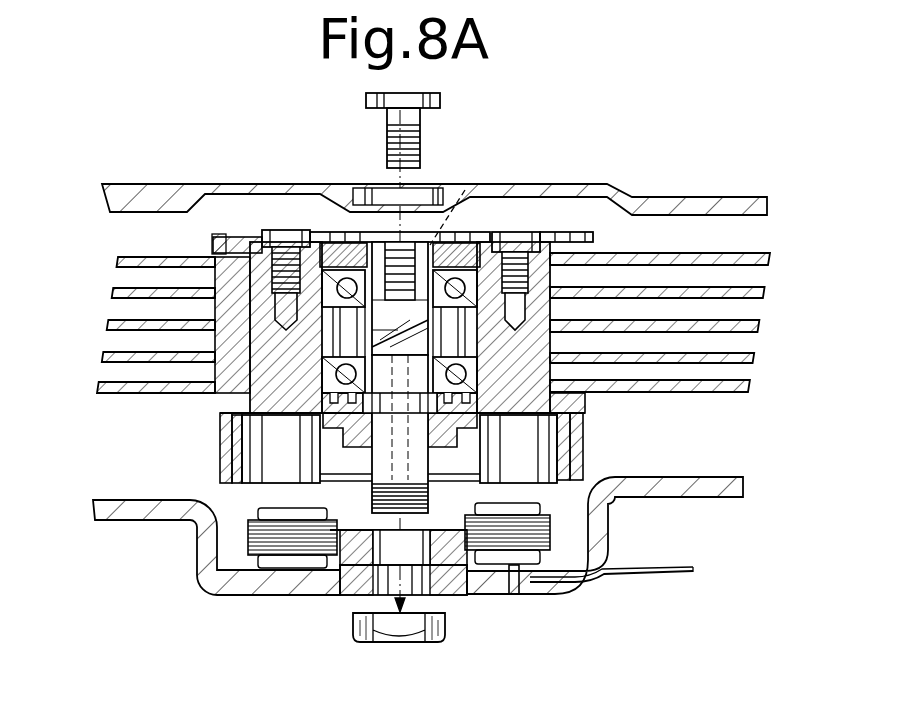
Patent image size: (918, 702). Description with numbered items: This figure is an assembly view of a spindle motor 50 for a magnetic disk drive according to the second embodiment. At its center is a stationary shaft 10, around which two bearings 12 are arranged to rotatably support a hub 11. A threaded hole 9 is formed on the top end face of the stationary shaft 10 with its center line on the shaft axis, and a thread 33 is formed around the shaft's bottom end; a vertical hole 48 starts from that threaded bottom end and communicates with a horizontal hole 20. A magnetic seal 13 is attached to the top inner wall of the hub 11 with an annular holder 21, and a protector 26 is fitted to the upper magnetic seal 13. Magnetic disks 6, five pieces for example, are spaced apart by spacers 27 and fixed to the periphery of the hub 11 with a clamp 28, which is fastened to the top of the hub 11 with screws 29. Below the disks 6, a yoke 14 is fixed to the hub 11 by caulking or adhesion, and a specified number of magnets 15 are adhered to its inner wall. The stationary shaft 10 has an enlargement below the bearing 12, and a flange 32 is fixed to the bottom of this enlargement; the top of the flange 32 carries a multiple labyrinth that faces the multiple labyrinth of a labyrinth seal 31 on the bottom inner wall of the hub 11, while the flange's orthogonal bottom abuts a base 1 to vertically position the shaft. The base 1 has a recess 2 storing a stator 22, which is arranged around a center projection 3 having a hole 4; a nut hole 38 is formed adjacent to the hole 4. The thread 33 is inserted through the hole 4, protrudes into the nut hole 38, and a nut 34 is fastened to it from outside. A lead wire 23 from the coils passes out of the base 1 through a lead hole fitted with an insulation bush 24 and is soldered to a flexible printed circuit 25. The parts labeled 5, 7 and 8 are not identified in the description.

The spindle motor 50 is at (97, 205).
The mounting plate 5 is at (678, 205).
The fixing screw 8 is at (440, 100).
The shaft pin 7 is at (412, 248).
The clamp 28 is at (215, 237).
The screws 29 is at (290, 230).
The annular holder 21 is at (330, 238).
The protector 26 is at (345, 262).
The magnetic seal 13 is at (452, 280).
The threaded hole 9 is at (428, 290).
The horizontal hole 20 is at (465, 190).
The bearings 12 is at (520, 290).
The hub 11 is at (268, 400).
The magnetic disks 6 is at (140, 290).
The spacers 27 is at (220, 335).
The stationary shaft 10 is at (255, 416).
The labyrinth seal 31 is at (258, 462).
The flange 32 is at (265, 478).
The yoke 14 is at (580, 437).
The magnets 15 is at (572, 462).
The vertical hole 48 is at (372, 470).
The thread 33 is at (428, 497).
The base 1 is at (710, 488).
The recess 2 is at (570, 562).
The lead wire 23 is at (562, 580).
The insulation bush 24 is at (520, 592).
The flexible printed circuit 25 is at (665, 574).
The stator 22 is at (282, 562).
The center projection 3 is at (455, 555).
The hole 4 is at (378, 548).
The nut hole 38 is at (380, 590).
The nut 34 is at (446, 628).